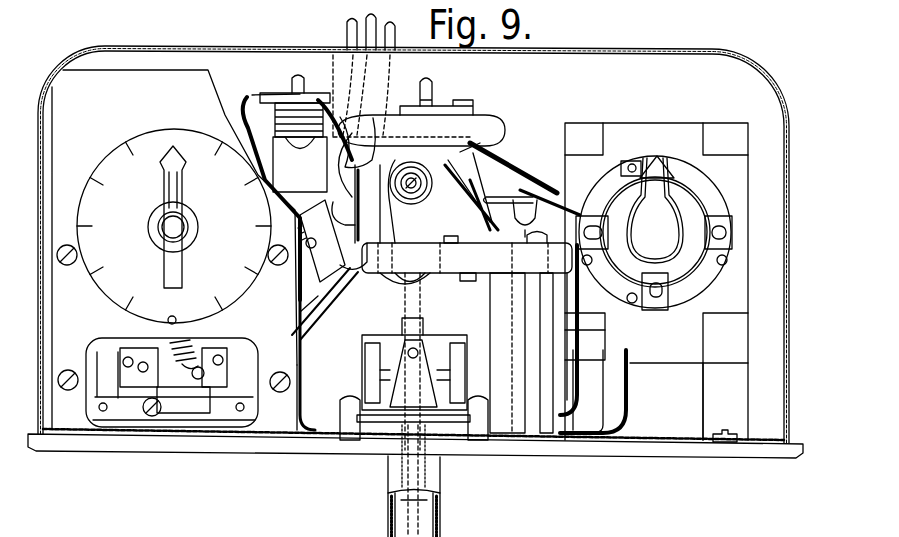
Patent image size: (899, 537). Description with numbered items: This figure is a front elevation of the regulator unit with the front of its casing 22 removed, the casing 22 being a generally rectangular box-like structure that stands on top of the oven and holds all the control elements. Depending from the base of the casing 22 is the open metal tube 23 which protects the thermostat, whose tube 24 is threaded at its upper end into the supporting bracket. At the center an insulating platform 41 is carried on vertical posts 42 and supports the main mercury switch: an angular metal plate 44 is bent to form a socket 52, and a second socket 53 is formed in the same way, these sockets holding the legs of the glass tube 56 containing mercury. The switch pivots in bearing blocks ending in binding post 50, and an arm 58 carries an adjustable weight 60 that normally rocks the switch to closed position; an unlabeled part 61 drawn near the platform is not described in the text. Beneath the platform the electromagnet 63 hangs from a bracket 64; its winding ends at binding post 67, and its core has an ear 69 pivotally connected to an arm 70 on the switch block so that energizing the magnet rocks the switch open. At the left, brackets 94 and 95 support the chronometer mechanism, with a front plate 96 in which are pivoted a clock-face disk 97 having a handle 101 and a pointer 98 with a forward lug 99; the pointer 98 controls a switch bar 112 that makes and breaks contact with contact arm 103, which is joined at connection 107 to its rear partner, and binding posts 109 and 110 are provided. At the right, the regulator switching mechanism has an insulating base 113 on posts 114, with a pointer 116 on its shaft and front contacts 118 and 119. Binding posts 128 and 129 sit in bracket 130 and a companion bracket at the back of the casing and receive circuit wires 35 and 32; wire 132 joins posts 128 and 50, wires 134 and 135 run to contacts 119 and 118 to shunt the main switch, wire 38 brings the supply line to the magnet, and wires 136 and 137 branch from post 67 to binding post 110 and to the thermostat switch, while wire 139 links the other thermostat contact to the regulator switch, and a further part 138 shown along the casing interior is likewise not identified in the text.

The casing 22 is at (680, 452).
The metal tube 23 is at (441, 514).
The tube 24 is at (390, 518).
The circuit wire 32 is at (394, 42).
The circuit wire 35 is at (345, 28).
The wire 38 is at (348, 42).
The insulating platform 41 is at (448, 266).
The vertical posts 42 is at (530, 325).
The angular metal plate 44 is at (368, 240).
The binding post 50 is at (410, 287).
The socket 52 is at (365, 224).
The socket 53 is at (435, 186).
The glass tube 56 is at (480, 120).
The arm 58 is at (340, 205).
The weight 60 is at (298, 288).
The frame bar 61 is at (467, 263).
The electromagnet 63 is at (505, 343).
The bracket 64 is at (576, 372).
The binding post 67 is at (468, 282).
The ear 69 is at (528, 194).
The arm 70 is at (496, 142).
The bracket 94 is at (67, 423).
The bracket 95 is at (280, 445).
The front plate 96 is at (174, 210).
The disk 97 is at (147, 142).
The pointer 98 is at (176, 148).
The lug 99 is at (158, 180).
The handle 101 is at (180, 318).
The contact arm 103 is at (140, 395).
The connection 107 is at (173, 406).
The binding post 109 is at (102, 412).
The binding post 110 is at (240, 410).
The switch bar 112 is at (195, 357).
The insulating base 113 is at (735, 177).
The posts 114 is at (710, 398).
The pointer 116 is at (652, 165).
The contact 118 is at (652, 198).
The contact 119 is at (660, 305).
The binding post 128 is at (300, 164).
The binding post 129 is at (436, 96).
The bracket 130 is at (276, 152).
The wire 132 is at (250, 112).
The wire 134 is at (493, 170).
The wire 135 is at (508, 190).
The wire 136 is at (330, 302).
The wire 137 is at (605, 330).
The insulating liner 138 is at (318, 425).
The wire 139 is at (352, 360).